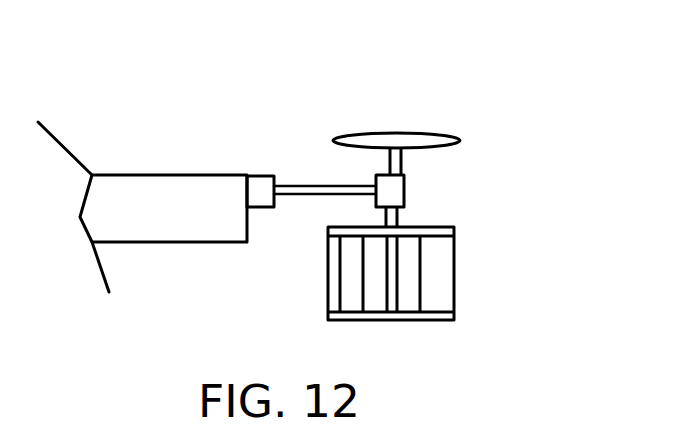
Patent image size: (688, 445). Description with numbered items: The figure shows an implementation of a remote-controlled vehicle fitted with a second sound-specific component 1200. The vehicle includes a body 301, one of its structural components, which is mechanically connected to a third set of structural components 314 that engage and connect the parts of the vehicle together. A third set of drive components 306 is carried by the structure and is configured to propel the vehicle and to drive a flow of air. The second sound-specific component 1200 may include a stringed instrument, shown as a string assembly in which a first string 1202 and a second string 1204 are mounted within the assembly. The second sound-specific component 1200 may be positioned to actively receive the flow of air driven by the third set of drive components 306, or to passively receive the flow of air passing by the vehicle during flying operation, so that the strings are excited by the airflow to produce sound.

The body 301 is at (186, 220).
The third set of structural components 314 is at (266, 132).
The third set of drive components 306 is at (472, 162).
The second sound-specific component 1200 is at (415, 282).
The first string 1202 is at (418, 293).
The second string 1204 is at (362, 293).